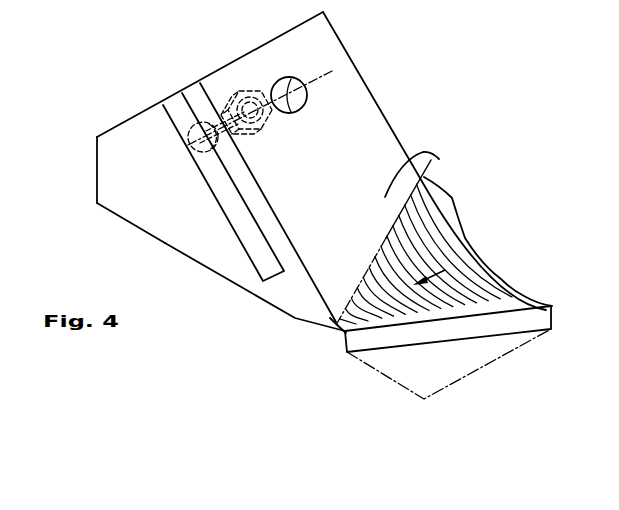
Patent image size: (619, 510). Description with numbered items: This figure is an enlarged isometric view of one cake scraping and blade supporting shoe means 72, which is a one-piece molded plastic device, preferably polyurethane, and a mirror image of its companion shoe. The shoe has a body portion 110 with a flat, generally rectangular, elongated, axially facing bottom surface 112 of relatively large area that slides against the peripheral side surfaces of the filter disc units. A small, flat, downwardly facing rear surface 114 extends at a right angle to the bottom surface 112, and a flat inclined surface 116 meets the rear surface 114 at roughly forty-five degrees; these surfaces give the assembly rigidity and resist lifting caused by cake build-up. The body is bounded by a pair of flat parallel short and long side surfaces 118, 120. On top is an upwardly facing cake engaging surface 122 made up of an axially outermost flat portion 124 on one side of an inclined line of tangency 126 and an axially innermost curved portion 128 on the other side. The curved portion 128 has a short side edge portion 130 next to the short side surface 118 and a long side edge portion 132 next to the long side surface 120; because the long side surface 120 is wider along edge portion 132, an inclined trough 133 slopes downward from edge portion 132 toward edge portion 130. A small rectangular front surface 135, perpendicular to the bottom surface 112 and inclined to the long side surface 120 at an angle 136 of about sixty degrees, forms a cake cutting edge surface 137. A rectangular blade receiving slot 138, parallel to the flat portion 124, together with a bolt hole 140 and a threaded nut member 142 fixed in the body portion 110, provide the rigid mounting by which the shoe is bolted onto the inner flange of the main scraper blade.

The cake scraping and blade supporting shoe means 72 is at (393, 111).
The body portion 110 is at (161, 196).
The bottom surface 112 is at (138, 228).
The rear surface 114 is at (96, 171).
The inclined surface 116 is at (128, 120).
The short side surface 118 is at (206, 237).
The long side surface 120 is at (394, 132).
The cake engaging surface 122 is at (447, 156).
The flat portion 124 is at (343, 107).
The line of tangency 126 is at (453, 199).
The curved portion 128 is at (440, 243).
The short side edge portion 130 is at (336, 324).
The long side edge portion 132 is at (480, 266).
The inclined trough 133 is at (342, 335).
The front surface 135 is at (465, 330).
The angle 136 is at (525, 306).
The cake cutting edge surface 137 is at (553, 318).
The blade receiving slot 138 is at (240, 217).
The bolt hole 140 is at (290, 85).
The threaded nut member 142 is at (240, 82).